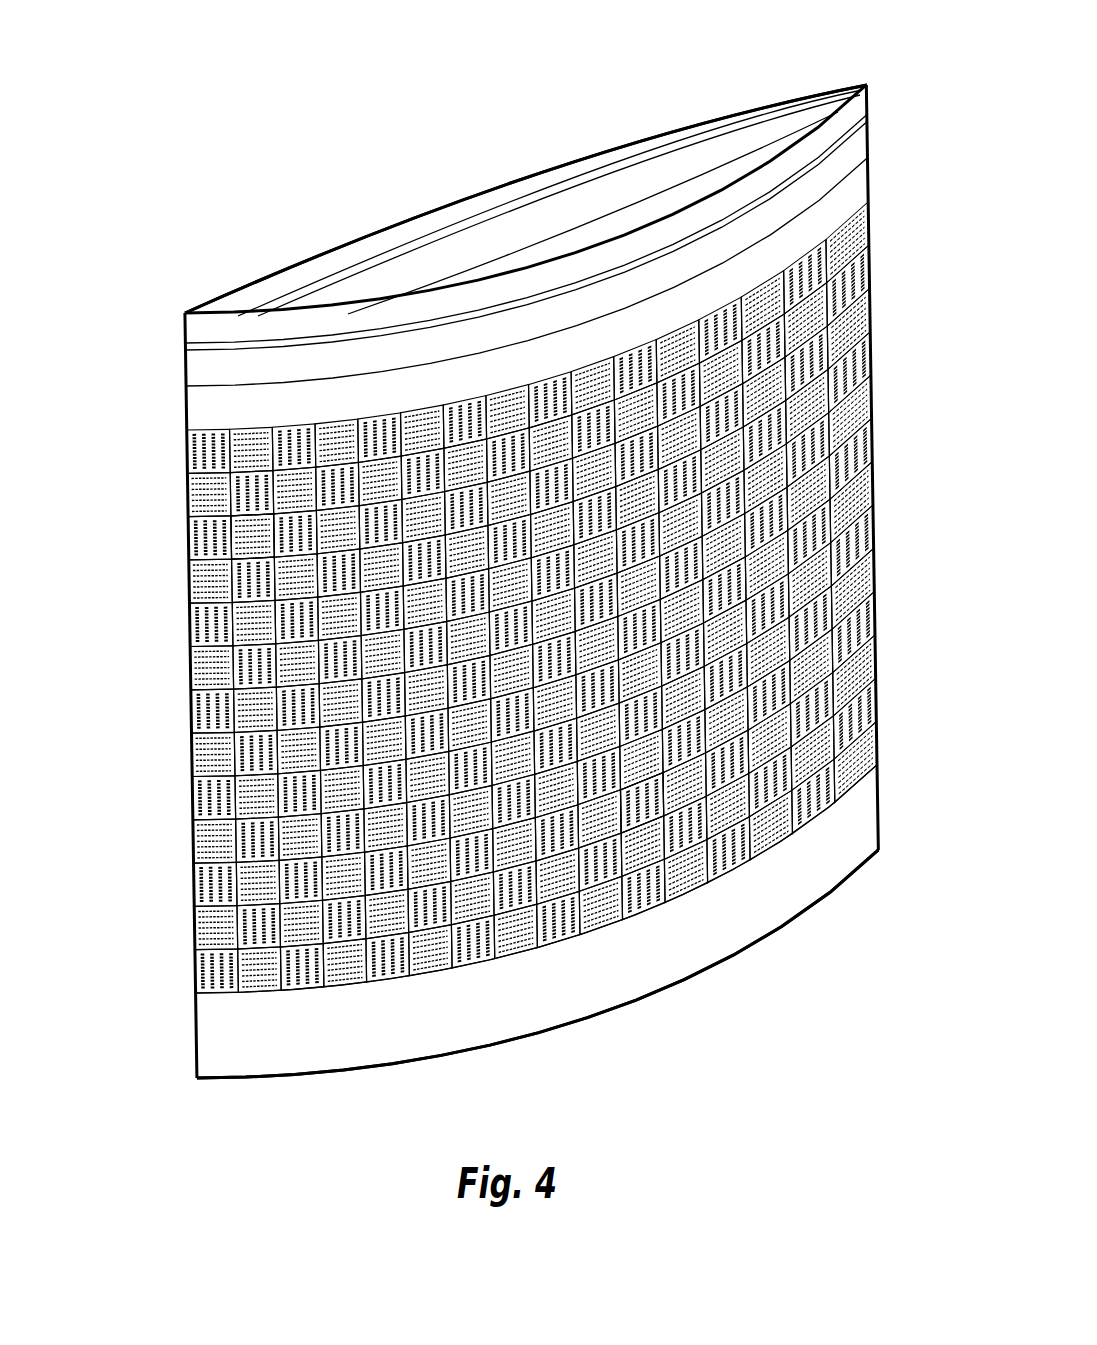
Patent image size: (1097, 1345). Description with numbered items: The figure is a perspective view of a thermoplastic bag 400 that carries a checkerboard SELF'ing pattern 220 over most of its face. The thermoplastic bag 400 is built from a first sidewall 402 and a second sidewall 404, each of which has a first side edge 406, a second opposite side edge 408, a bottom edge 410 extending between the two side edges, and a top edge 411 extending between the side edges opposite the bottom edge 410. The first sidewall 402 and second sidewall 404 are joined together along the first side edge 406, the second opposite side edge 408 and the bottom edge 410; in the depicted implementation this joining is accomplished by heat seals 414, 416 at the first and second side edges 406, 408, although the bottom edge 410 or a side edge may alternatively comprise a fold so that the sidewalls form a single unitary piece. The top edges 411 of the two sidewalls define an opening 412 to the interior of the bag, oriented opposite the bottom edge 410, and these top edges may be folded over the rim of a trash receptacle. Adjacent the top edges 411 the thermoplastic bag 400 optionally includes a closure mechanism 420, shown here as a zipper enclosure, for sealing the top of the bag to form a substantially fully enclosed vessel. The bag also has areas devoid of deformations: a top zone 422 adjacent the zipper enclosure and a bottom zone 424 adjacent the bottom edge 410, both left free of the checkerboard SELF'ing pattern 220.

The thermoplastic bag 400 is at (190, 246).
The first sidewall 402 is at (802, 720).
The second sidewall 404 is at (307, 256).
The first side edge 406 is at (190, 742).
The second opposite side edge 408 is at (878, 452).
The bottom edge 410 is at (353, 1078).
The top edge 411 is at (372, 258).
The opening 412 is at (462, 282).
The heat seal 414 is at (197, 1062).
The heat seal 416 is at (876, 648).
The closure mechanism 420 is at (185, 357).
The top zone 422 is at (837, 198).
The bottom zone 424 is at (223, 1018).
The checkerboard SELF'ing pattern 220 is at (255, 536).